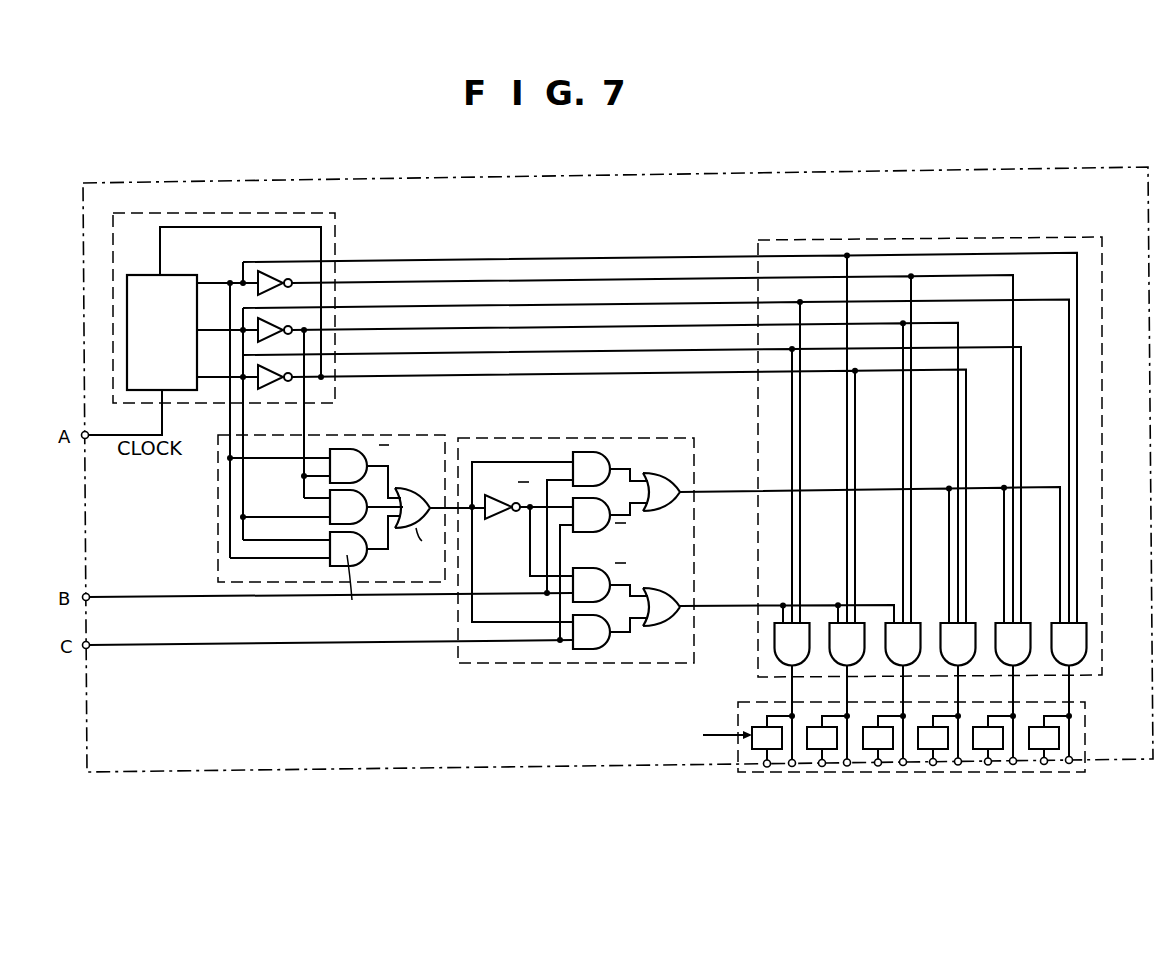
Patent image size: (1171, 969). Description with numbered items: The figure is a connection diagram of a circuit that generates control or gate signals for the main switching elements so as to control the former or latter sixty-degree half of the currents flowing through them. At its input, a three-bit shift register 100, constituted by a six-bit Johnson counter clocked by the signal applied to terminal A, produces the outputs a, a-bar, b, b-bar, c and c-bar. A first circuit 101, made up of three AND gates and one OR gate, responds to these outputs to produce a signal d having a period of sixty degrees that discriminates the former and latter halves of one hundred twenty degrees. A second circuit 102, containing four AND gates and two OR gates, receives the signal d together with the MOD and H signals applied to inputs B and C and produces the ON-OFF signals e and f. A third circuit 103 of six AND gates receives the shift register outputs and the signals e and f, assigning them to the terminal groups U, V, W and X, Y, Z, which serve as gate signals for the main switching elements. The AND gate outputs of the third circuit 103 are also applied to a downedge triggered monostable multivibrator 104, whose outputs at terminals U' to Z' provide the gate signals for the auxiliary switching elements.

The 3 bit shift register 100 is at (183, 275).
The first circuit 101 is at (373, 435).
The second circuit 102 is at (620, 436).
The third circuit 103 is at (1033, 238).
The downedge triggered monostable multivibrator 104 is at (740, 776).